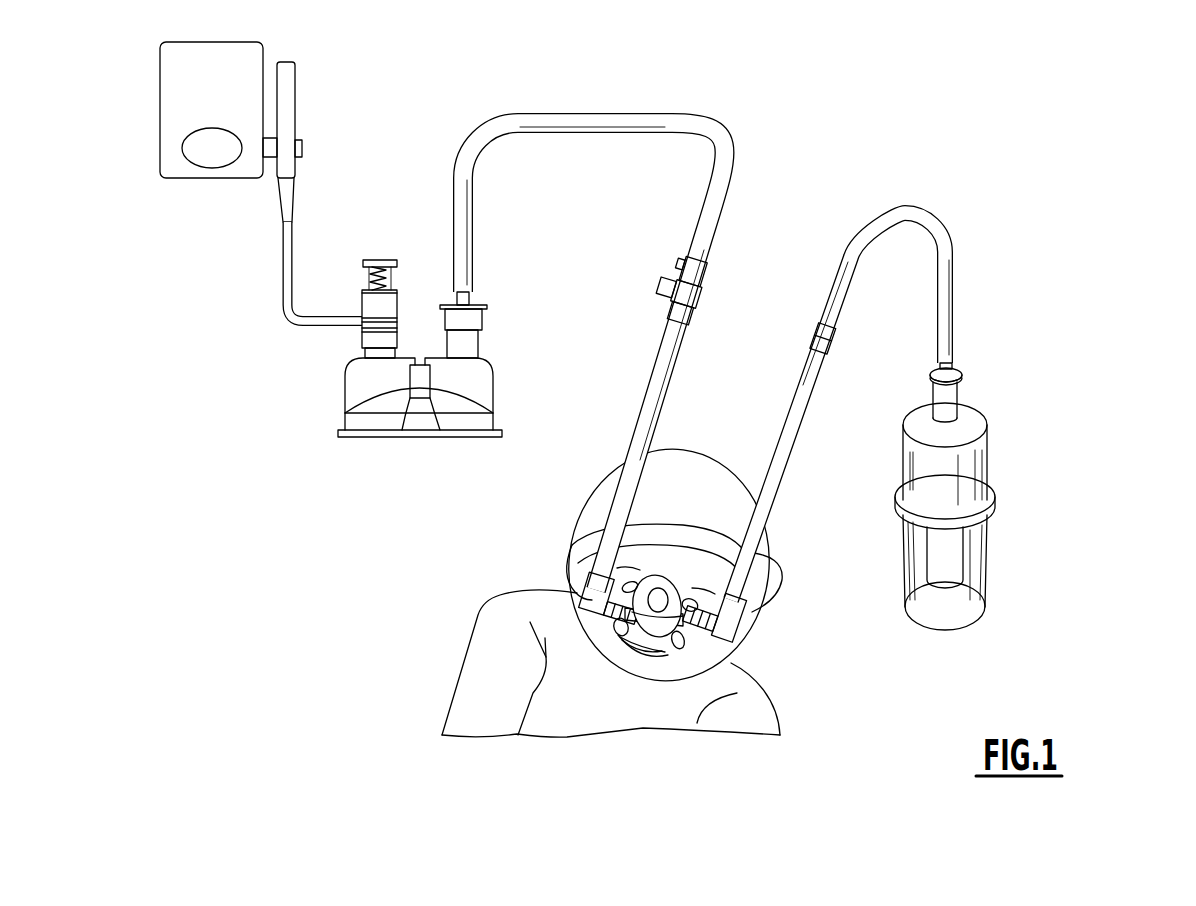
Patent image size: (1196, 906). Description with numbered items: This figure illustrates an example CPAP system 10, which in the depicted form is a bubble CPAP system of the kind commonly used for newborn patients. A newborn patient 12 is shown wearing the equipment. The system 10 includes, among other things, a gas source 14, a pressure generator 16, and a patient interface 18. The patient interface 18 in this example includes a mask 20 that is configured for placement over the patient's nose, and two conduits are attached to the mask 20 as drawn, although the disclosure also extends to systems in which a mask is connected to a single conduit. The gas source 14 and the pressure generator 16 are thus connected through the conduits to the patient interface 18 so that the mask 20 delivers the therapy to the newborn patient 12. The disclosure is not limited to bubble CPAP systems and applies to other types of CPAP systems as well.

The CPAP system 10 is at (669, 414).
The newborn patient 12 is at (718, 475).
The gas source 14 is at (342, 463).
The pressure generator 16 is at (1072, 418).
The patient interface 18 is at (708, 679).
The mask 20 is at (651, 644).